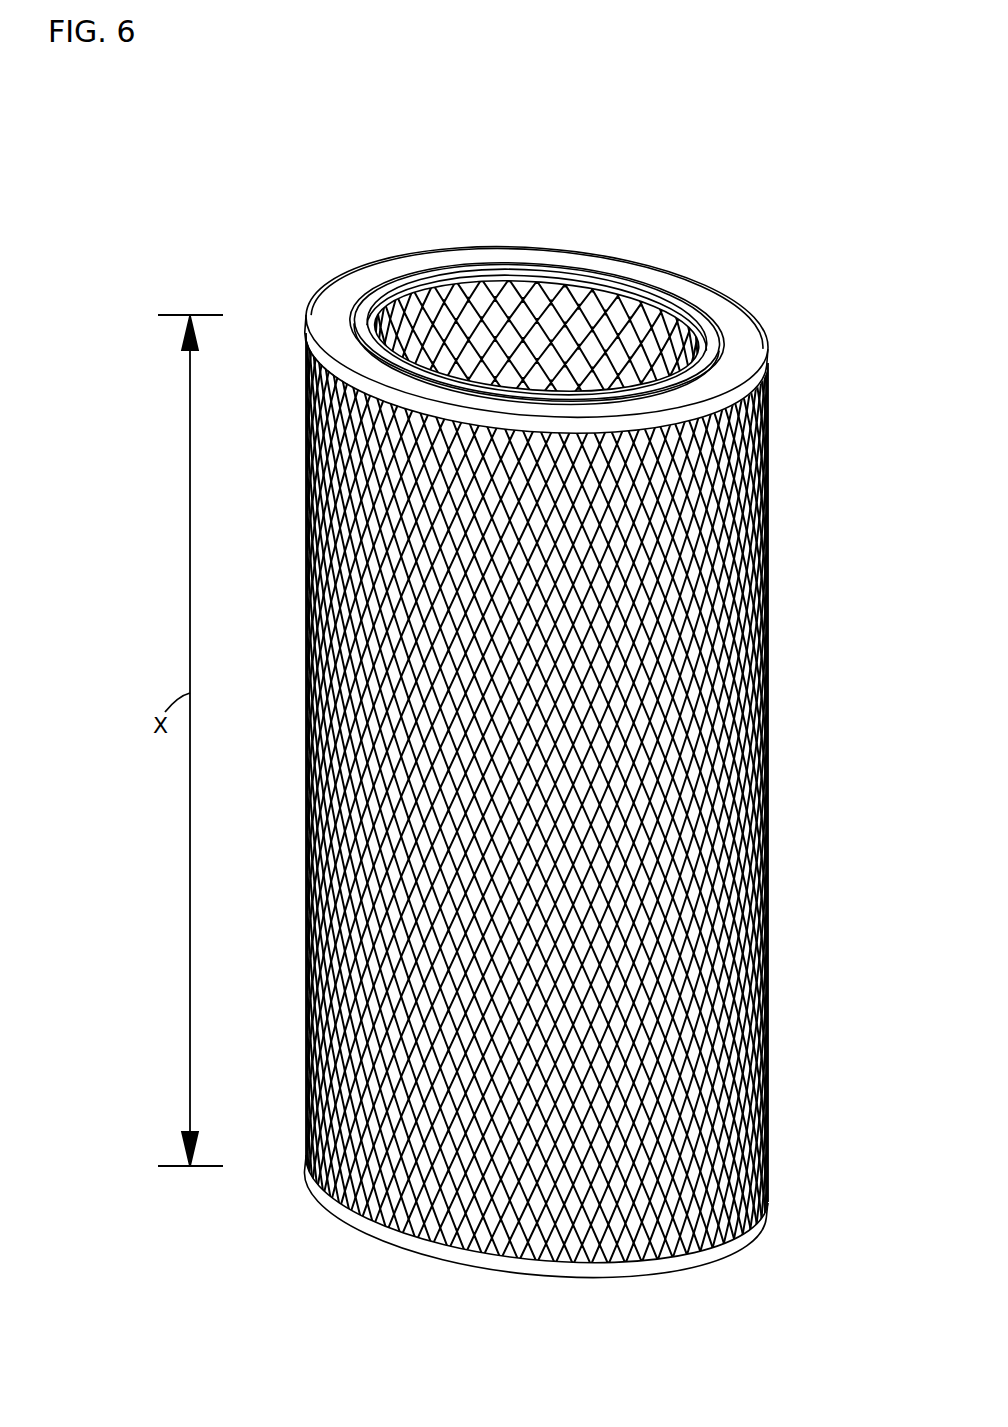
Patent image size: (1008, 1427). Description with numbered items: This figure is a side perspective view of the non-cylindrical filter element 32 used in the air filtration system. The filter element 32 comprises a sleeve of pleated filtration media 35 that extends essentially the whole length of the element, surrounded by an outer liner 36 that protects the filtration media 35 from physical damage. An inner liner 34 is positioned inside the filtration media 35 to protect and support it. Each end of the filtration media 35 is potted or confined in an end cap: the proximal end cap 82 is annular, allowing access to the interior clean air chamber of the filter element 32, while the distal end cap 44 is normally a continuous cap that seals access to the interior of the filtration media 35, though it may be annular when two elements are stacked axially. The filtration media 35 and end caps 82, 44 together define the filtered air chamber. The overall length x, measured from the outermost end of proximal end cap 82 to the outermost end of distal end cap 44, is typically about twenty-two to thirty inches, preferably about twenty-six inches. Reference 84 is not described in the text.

The non-cylindrical filter element 32 is at (496, 209).
The inner liner 34 is at (520, 332).
The pleated filtration media 35 is at (430, 620).
The outer liner 36 is at (385, 695).
The distal end cap 44 is at (320, 1188).
The proximal end cap 82 is at (333, 302).
The annular lip 84 is at (375, 272).